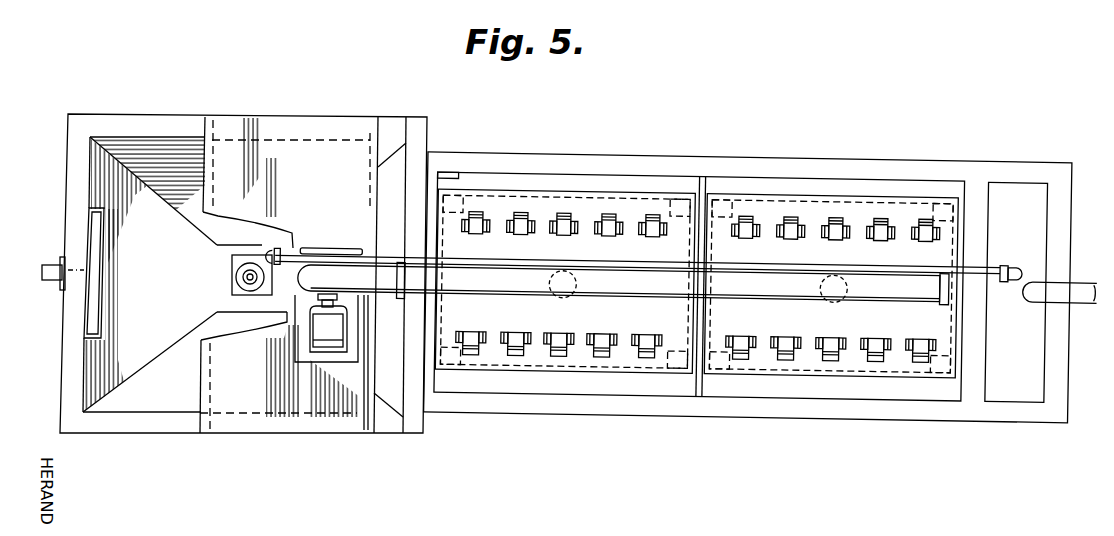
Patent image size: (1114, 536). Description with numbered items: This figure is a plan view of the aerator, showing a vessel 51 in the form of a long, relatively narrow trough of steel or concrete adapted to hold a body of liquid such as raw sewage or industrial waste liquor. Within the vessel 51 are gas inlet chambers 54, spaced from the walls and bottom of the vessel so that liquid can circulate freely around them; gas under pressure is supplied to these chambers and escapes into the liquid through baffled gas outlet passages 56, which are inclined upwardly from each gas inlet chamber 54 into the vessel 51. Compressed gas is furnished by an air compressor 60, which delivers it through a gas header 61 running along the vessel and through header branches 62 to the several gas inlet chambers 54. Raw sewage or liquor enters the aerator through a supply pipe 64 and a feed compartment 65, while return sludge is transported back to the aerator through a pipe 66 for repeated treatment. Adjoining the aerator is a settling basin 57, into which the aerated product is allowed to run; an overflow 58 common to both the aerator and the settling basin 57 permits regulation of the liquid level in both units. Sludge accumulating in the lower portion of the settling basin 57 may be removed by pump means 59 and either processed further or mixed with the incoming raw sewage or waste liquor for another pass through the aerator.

The vessel 51 is at (870, 163).
The gas inlet chamber 54 is at (748, 190).
The baffled gas outlet passages 56 is at (655, 236).
The settling basin 57 is at (184, 128).
The overflow 58 is at (75, 275).
The pump means 59 is at (232, 285).
The air compressor 60 is at (328, 268).
The gas header 61 is at (633, 297).
The header branches 62 is at (570, 300).
The supply pipe 64 is at (1083, 282).
The feed compartment 65 is at (1033, 345).
The pipe 66 is at (993, 268).